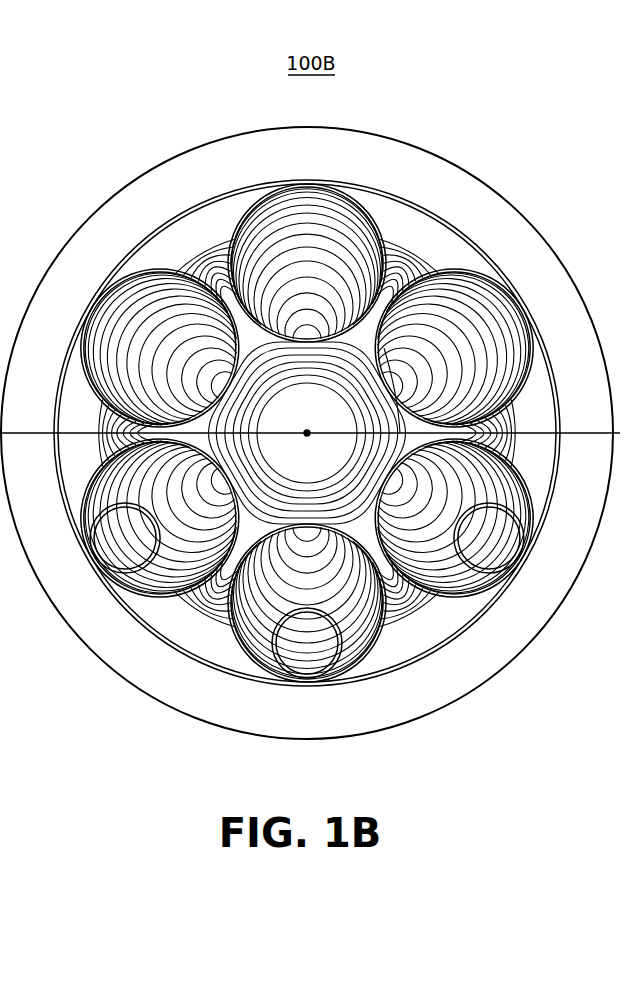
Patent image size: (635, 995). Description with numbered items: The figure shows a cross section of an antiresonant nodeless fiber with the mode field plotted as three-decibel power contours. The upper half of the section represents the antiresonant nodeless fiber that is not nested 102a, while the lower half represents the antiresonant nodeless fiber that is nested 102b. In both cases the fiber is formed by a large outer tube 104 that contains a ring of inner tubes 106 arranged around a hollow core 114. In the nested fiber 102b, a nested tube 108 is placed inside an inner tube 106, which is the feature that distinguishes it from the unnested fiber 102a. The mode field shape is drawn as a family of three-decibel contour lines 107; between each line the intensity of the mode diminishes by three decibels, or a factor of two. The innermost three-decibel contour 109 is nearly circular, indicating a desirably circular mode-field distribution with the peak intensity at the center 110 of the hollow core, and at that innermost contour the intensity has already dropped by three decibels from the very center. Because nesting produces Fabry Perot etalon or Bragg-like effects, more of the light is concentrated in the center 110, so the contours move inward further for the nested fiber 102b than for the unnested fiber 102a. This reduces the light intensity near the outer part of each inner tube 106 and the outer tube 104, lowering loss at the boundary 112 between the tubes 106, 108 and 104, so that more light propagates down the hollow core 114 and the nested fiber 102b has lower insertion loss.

The antiresonant nodeless fiber that is not nested 102a is at (318, 398).
The antiresonant nodeless fiber that is nested 102b is at (278, 499).
The outer tube 104 is at (495, 190).
The inner tube 106 is at (186, 289).
The 3 dB contour line 107 is at (557, 434).
The nested tube 108 is at (124, 566).
The innermost 3 dB contour 109 is at (357, 406).
The center 110 is at (308, 431).
The boundary 112 is at (95, 562).
The hollow core 114 is at (262, 418).